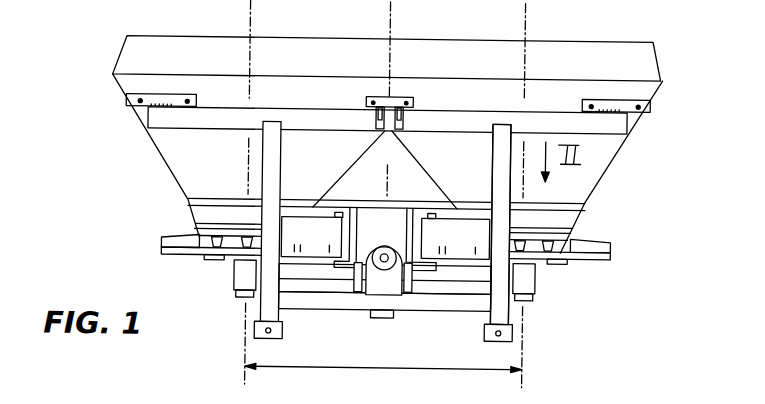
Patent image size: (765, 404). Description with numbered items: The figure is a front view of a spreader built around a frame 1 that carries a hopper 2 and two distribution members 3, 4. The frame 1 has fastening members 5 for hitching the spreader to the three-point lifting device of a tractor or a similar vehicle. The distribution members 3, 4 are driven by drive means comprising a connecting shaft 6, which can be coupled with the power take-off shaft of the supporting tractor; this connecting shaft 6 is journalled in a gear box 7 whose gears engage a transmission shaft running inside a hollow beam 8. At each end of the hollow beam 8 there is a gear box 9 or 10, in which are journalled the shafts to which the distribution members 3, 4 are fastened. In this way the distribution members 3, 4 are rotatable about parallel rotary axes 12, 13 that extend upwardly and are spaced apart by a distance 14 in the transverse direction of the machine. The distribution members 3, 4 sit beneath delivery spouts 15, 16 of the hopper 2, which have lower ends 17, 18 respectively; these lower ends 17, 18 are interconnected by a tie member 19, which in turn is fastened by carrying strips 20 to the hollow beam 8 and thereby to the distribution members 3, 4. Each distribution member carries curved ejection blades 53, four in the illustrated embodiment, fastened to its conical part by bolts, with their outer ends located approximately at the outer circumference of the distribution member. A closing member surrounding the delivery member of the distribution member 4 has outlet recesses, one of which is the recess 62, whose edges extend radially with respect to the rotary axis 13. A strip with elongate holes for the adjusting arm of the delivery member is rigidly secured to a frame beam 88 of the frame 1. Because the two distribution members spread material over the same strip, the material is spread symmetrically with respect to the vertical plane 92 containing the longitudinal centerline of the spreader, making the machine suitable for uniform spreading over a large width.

The frame 1 is at (286, 177).
The hopper 2 is at (206, 42).
The distribution member 3 is at (163, 254).
The distribution member 4 is at (612, 251).
The fastening members 5 is at (386, 131).
The connecting shaft 6 is at (371, 248).
The gear box 7 is at (382, 286).
The hollow beam 8 is at (438, 283).
The gear box 9 is at (235, 294).
The gear box 10 is at (535, 297).
The rotary axis 12 is at (250, 63).
The rotary axis 13 is at (525, 67).
The distance 14 is at (376, 370).
The delivery spout 15 is at (200, 193).
The delivery spout 16 is at (573, 194).
The lower end 17 is at (190, 213).
The lower end 18 is at (577, 223).
The tie member 19 is at (358, 208).
The carrying strips 20 is at (405, 208).
The ejection blades 53 is at (168, 238).
The recess 62 is at (217, 260).
The frame beam 88 is at (495, 160).
The vertical plane 92 is at (392, 62).